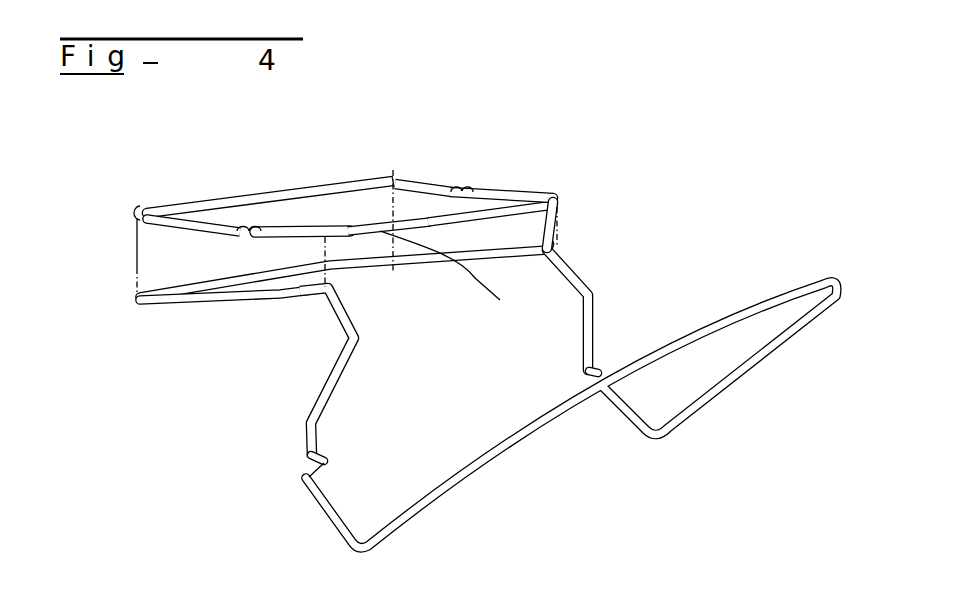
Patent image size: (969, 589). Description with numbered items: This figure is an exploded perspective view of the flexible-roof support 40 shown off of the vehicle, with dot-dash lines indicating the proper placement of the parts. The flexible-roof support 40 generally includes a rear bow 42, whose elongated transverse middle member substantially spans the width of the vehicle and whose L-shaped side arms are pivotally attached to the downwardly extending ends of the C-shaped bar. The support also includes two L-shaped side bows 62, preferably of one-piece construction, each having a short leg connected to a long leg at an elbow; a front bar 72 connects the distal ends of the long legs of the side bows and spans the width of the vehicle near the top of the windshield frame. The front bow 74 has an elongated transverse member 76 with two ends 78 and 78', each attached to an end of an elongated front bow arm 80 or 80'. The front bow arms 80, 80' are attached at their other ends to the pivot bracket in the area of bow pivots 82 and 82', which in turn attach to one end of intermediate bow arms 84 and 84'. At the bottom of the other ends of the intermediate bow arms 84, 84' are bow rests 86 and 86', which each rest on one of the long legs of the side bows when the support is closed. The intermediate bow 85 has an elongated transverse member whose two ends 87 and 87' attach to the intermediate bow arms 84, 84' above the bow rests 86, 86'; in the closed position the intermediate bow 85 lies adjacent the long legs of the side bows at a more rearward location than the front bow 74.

The flexible-roof support 40 is at (448, 276).
The rear bow 42 is at (812, 282).
The L-shaped side bow 62 is at (334, 322).
The front bar 72 is at (347, 266).
The front bow 74 is at (376, 239).
The elongated transverse member 76 is at (283, 185).
The end 78 is at (100, 217).
The end 78' is at (386, 188).
The front bow arm 80 is at (168, 246).
The front bow arm 80' is at (445, 150).
The bow pivot 82 is at (194, 292).
The bow pivot 82' is at (506, 163).
The intermediate bow arm 84 is at (281, 304).
The intermediate bow arm 84' is at (555, 169).
The intermediate bow 85 is at (501, 219).
The bow rest 86 is at (413, 277).
The bow rest 86' is at (620, 225).
The end 87 is at (458, 279).
The end 87' is at (565, 296).